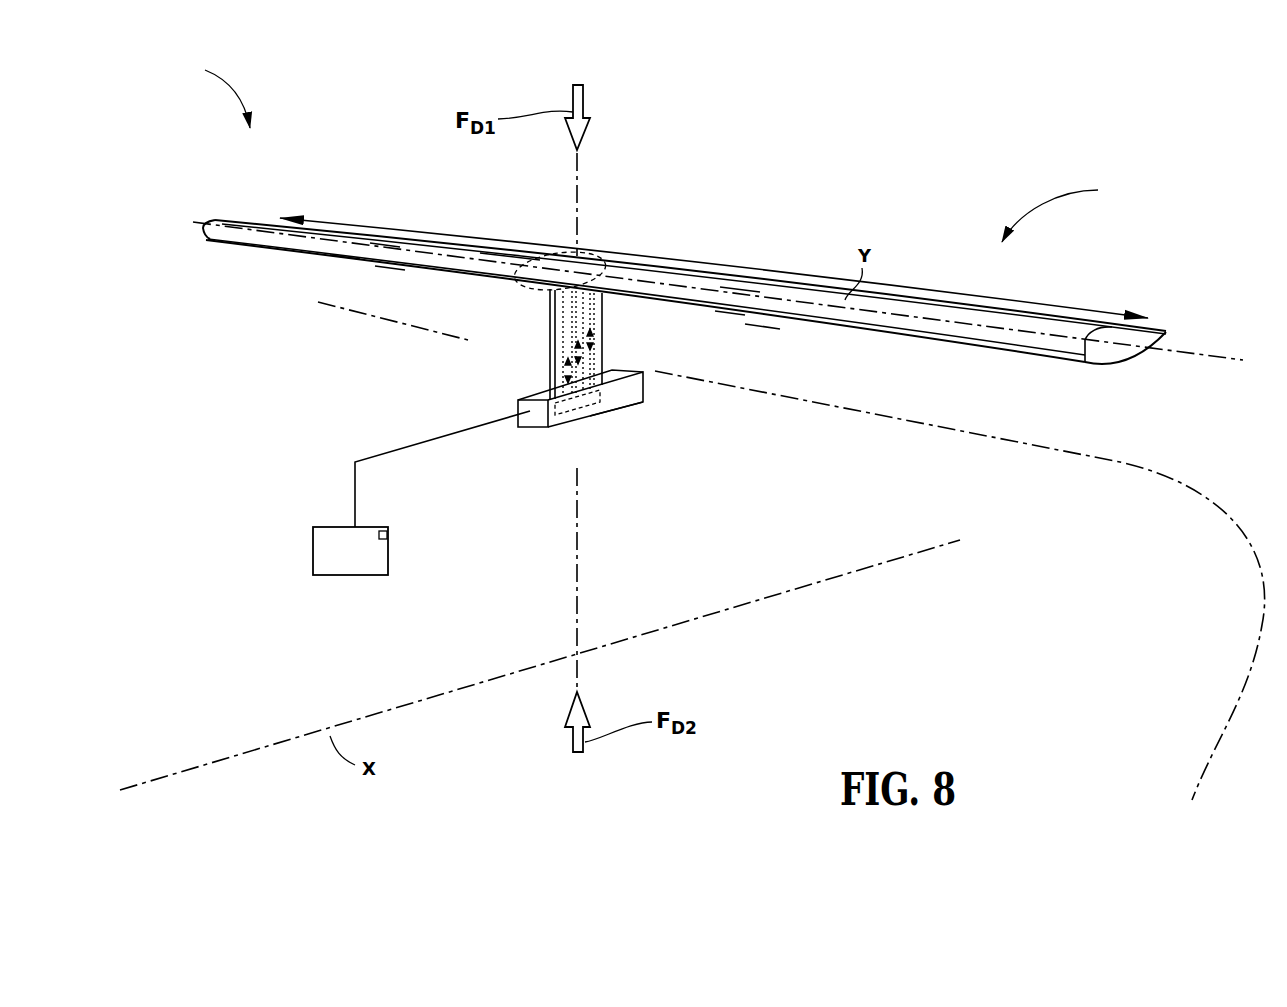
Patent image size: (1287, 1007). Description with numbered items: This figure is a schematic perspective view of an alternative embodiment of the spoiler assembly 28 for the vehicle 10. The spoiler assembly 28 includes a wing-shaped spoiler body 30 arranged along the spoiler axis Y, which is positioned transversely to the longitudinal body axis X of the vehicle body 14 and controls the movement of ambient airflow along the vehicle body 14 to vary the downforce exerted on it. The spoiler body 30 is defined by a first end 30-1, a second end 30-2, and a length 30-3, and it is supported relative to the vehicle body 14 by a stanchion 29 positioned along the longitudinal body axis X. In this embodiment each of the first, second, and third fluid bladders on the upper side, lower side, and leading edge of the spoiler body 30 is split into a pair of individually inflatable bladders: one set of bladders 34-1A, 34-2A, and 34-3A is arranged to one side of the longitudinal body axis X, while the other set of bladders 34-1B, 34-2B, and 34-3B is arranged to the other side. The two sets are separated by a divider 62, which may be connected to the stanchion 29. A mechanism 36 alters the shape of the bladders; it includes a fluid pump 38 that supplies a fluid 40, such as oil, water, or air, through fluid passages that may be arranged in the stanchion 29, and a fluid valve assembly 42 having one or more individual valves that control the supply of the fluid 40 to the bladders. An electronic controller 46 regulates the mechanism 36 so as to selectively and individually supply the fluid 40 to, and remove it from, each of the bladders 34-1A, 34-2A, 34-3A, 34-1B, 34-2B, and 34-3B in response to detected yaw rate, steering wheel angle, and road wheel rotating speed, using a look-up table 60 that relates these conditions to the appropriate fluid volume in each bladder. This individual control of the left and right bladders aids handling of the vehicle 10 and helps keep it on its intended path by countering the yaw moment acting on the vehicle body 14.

The vehicle 10 is at (213, 93).
The vehicle body 14 is at (1218, 705).
The spoiler assembly 28 is at (1065, 210).
The stanchion 29 is at (572, 344).
The spoiler body 30 is at (684, 269).
The first end 30-1 is at (212, 242).
The second end 30-2 is at (1018, 352).
The length 30-3 is at (508, 242).
The individually inflatable bladder 34-1A is at (378, 245).
The individually inflatable bladder 34-1B is at (735, 290).
The individually inflatable bladder 34-2A is at (386, 269).
The individually inflatable bladder 34-2B is at (760, 325).
The individually inflatable bladder 34-3A is at (340, 257).
The individually inflatable bladder 34-3B is at (728, 315).
The mechanism 36 is at (601, 430).
The fluid pump 38 is at (616, 432).
The fluid 40 is at (568, 372).
The fluid valve assembly 42 is at (582, 418).
The electronic controller 46 is at (350, 551).
The look-up table 60 is at (392, 536).
The divider 62 is at (517, 283).